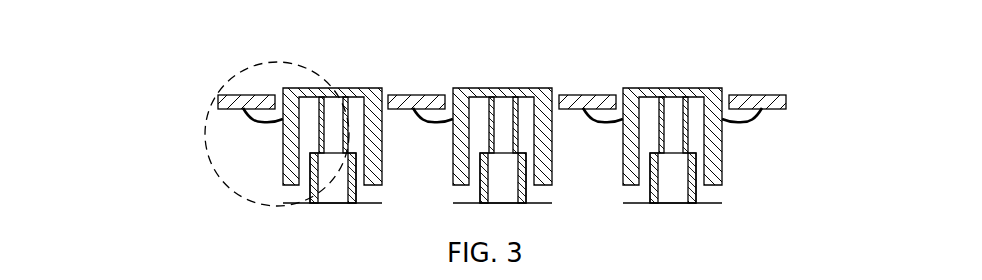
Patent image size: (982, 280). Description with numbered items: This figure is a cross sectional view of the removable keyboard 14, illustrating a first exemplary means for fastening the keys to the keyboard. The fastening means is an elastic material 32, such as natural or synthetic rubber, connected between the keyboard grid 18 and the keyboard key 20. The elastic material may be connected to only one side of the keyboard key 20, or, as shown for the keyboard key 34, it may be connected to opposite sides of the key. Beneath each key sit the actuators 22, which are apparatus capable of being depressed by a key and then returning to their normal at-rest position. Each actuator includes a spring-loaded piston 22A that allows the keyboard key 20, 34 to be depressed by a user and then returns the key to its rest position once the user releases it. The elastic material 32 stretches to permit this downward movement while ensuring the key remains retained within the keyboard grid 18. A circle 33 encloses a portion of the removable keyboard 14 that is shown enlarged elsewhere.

The removable keyboard 14 is at (205, 42).
The keyboard grid 18 is at (232, 95).
The keyboard key 20 is at (372, 90).
The actuator 22 is at (507, 190).
The spring-loaded piston 22A is at (500, 118).
The elastic material 32 is at (257, 124).
The circle 33 is at (297, 64).
The keyboard key 34 is at (677, 93).